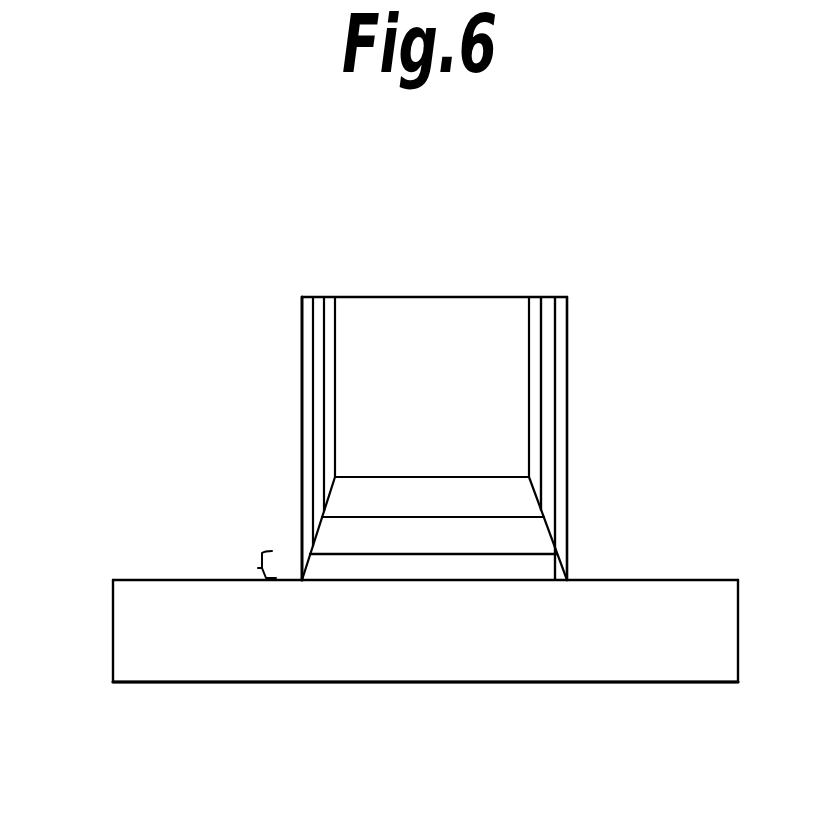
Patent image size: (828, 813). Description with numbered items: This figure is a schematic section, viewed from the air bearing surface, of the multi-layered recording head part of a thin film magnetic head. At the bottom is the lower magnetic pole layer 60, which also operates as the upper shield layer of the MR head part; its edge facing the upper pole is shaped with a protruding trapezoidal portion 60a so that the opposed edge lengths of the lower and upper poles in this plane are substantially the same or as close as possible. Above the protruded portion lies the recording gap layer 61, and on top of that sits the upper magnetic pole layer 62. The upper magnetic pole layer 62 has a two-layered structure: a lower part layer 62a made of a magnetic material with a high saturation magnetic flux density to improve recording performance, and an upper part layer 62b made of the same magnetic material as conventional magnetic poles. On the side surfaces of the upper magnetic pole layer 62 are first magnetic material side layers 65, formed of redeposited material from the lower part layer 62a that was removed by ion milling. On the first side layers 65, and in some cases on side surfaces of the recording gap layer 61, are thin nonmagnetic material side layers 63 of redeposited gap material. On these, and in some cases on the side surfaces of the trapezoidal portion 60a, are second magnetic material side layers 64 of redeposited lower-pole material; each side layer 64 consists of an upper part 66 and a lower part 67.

The lower magnetic pole layer 60 is at (688, 648).
The trapezoidal portion 60a is at (513, 587).
The recording gap layer 61 is at (371, 540).
The upper magnetic pole layer 62 is at (295, 438).
The lower part layer 62a is at (350, 492).
The upper part layer 62b is at (353, 392).
The nonmagnetic material side layers 63 is at (540, 415).
The second magnetic material side layers 64 is at (542, 522).
The first magnetic material side layers 65 is at (529, 343).
The upper part 66 is at (277, 545).
The lower part 67 is at (258, 568).